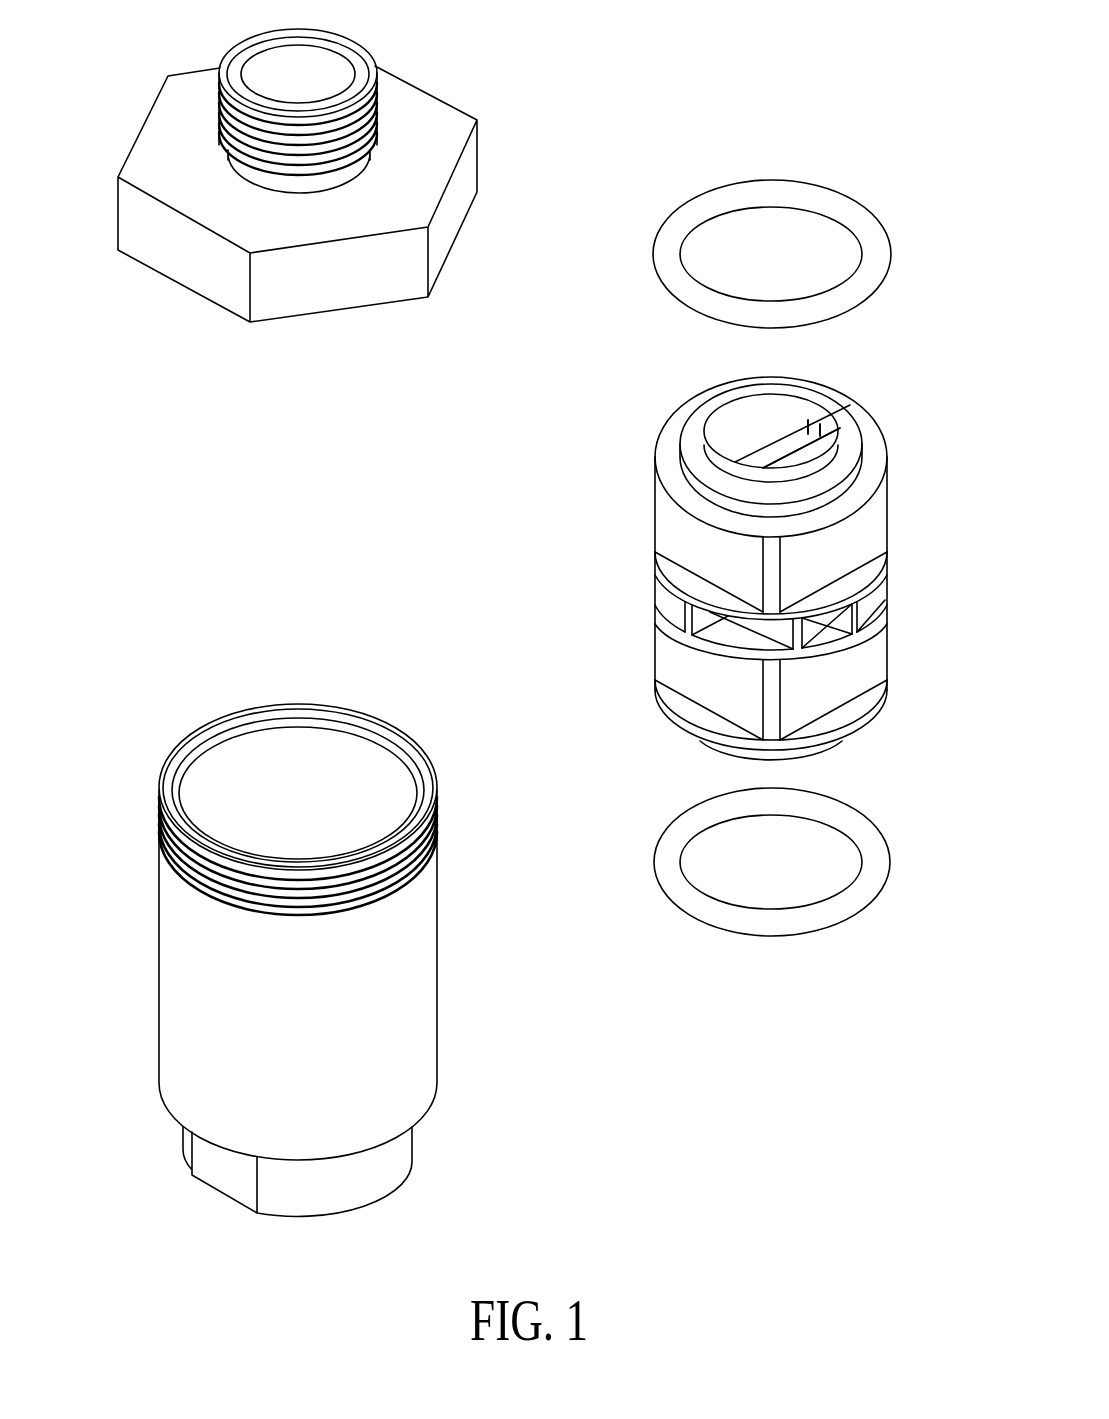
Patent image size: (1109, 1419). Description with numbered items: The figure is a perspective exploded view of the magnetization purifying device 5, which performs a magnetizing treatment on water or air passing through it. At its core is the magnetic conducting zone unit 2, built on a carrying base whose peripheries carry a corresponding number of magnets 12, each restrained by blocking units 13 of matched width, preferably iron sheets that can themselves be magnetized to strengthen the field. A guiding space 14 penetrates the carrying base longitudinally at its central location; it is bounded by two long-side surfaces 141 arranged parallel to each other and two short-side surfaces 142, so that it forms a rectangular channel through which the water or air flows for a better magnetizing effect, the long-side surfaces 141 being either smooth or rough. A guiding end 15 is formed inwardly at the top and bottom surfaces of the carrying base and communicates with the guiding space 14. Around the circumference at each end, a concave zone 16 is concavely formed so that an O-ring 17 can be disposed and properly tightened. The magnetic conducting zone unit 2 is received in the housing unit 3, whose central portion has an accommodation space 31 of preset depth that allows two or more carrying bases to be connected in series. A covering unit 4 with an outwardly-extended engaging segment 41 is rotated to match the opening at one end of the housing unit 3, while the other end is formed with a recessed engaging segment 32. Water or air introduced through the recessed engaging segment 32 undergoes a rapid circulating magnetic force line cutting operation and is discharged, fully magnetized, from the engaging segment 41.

The magnetic conducting zone unit 2 is at (777, 541).
The housing unit 3 is at (263, 959).
The covering unit 4 is at (273, 187).
The magnetization purifying device 5 is at (180, 522).
The magnet 12 is at (868, 523).
The blocking unit 13 is at (848, 550).
The guiding space 14 is at (760, 395).
The guiding end 15 is at (748, 415).
The concave zone 16 is at (673, 458).
The O-ring 17 is at (880, 240).
The accommodation space 31 is at (257, 787).
The recessed engaging segment 32 is at (330, 1188).
The engaging segment 41 is at (251, 143).
The long-side surface 141 is at (758, 450).
The short-side surface 142 is at (735, 462).